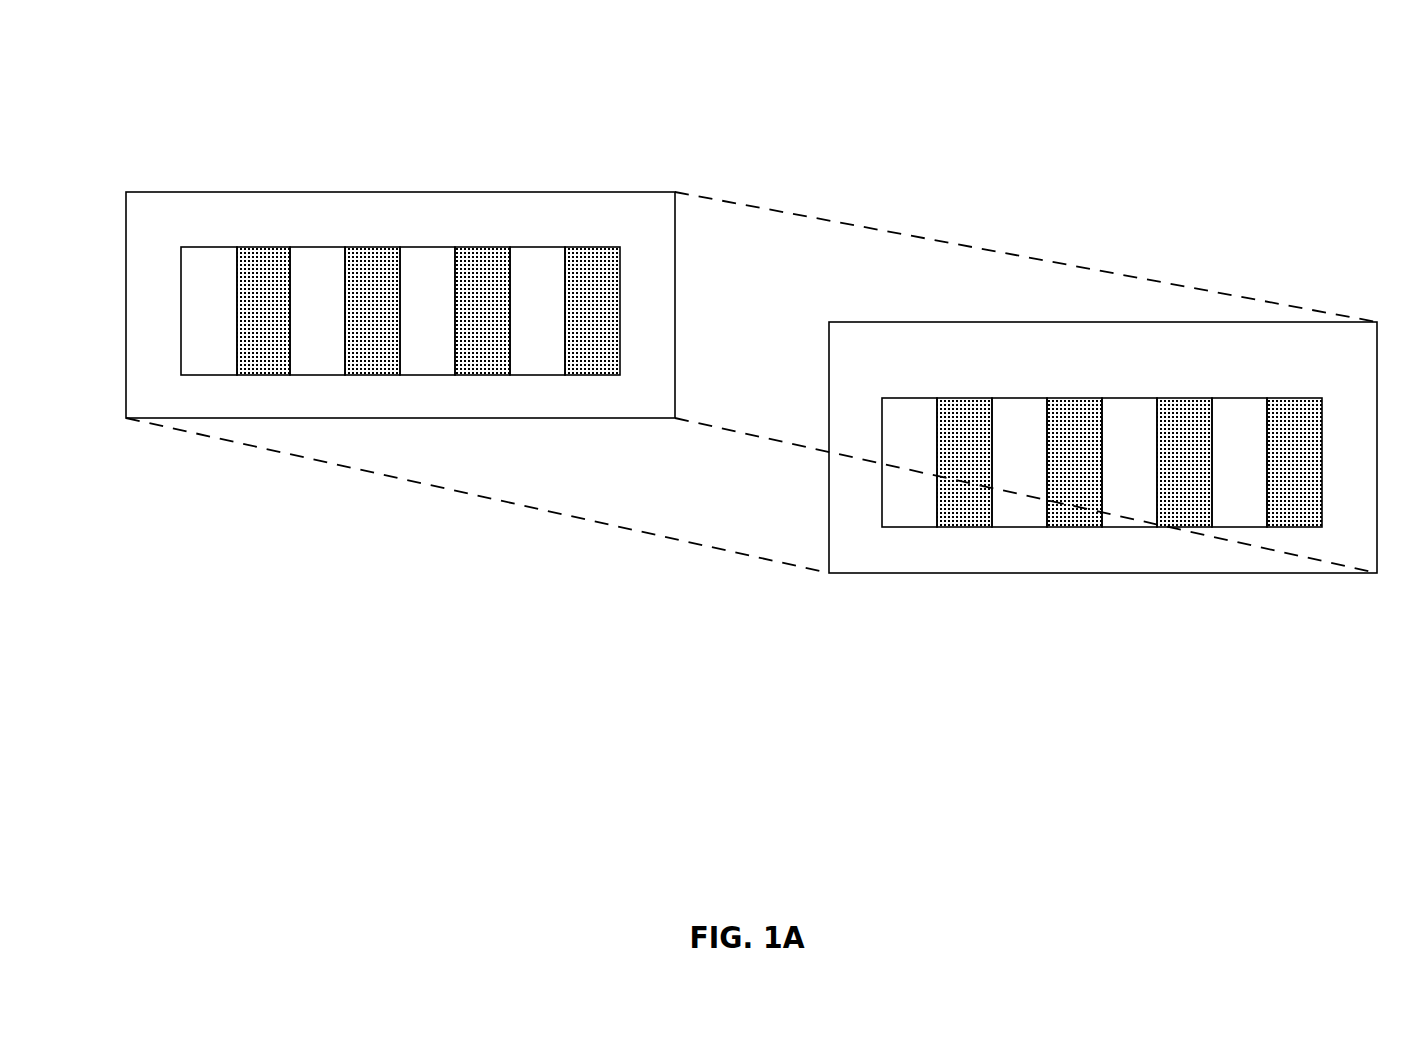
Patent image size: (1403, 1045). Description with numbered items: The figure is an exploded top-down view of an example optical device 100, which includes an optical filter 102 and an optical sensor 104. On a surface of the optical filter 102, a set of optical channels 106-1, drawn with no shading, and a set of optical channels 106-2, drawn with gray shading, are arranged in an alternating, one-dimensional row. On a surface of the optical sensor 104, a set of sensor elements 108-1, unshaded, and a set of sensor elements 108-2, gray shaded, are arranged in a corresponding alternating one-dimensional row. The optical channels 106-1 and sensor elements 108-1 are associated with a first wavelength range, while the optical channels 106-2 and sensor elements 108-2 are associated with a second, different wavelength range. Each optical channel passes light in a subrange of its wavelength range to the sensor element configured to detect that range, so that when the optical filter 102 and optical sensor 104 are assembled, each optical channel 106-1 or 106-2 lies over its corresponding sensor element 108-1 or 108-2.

The optical device 100 is at (252, 50).
The optical filter 102 is at (400, 370).
The optical sensor 104 is at (1103, 423).
The set of optical channels 106-1 is at (209, 292).
The set of optical channels 106-2 is at (251, 332).
The set of sensor elements 108-1 is at (914, 418).
The set of sensor elements 108-2 is at (1285, 482).